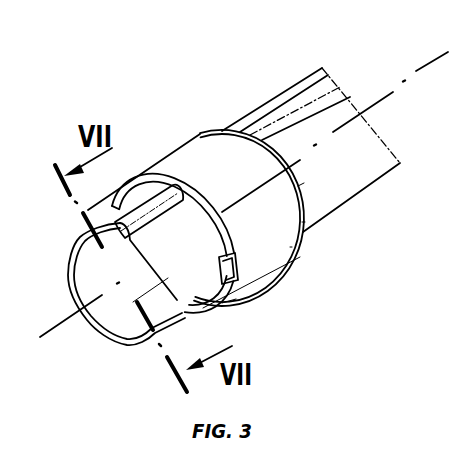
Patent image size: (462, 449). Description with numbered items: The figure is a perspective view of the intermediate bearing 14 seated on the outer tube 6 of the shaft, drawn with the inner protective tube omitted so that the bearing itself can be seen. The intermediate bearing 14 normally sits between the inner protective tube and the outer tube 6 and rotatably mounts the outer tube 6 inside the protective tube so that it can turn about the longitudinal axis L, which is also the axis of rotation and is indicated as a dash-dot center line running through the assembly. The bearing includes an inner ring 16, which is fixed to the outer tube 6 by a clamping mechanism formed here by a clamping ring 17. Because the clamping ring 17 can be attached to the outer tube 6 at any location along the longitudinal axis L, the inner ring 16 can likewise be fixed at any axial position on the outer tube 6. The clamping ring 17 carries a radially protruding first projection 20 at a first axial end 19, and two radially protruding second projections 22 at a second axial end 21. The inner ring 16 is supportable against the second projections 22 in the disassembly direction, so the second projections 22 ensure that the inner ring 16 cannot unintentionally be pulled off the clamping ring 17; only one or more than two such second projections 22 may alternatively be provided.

The outer tube 6 is at (112, 295).
The intermediate bearing 14 is at (163, 142).
The inner ring 16 is at (268, 245).
The clamping ring 17 is at (229, 301).
The first axial end 19 is at (303, 182).
The first projection 20 is at (304, 221).
The second axial end 21 is at (194, 241).
The second projections 22 is at (238, 272).
The longitudinal axis L is at (426, 68).